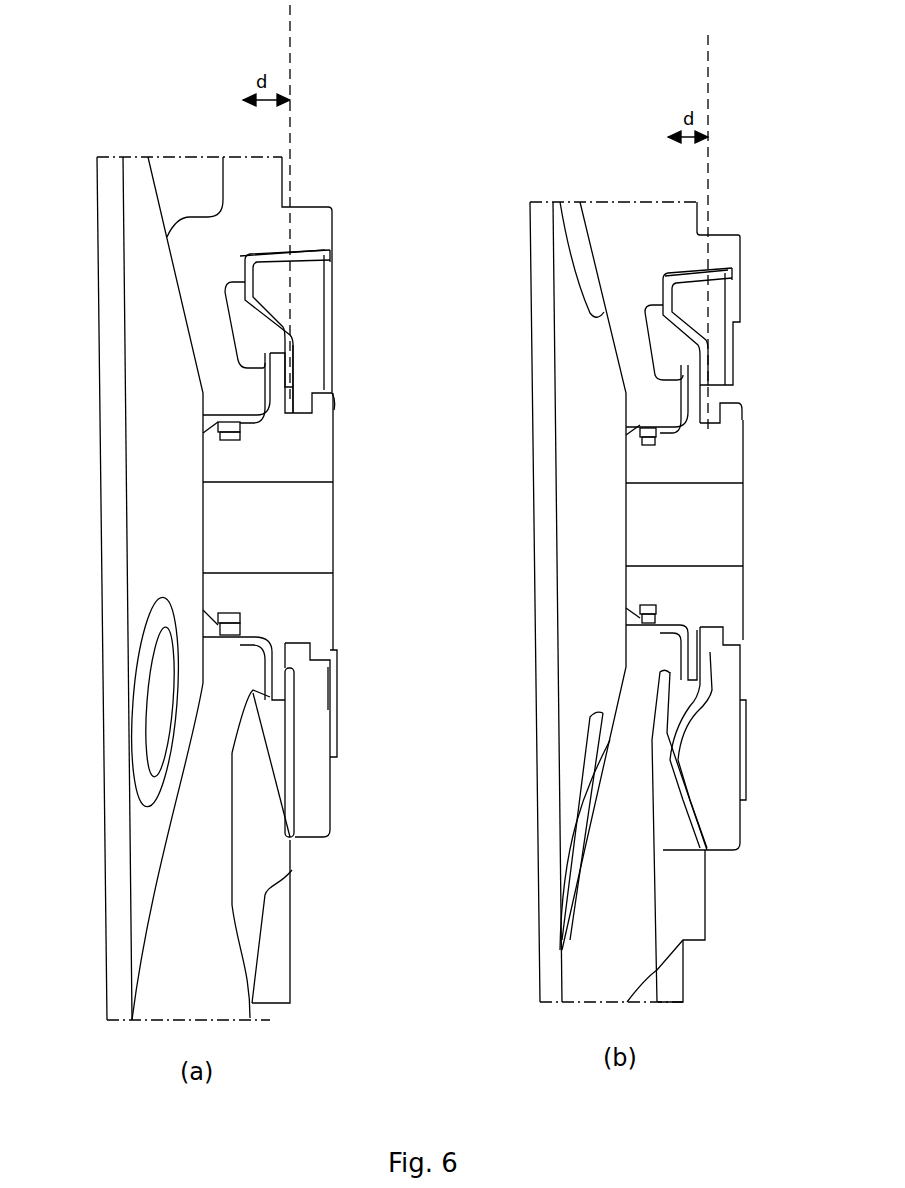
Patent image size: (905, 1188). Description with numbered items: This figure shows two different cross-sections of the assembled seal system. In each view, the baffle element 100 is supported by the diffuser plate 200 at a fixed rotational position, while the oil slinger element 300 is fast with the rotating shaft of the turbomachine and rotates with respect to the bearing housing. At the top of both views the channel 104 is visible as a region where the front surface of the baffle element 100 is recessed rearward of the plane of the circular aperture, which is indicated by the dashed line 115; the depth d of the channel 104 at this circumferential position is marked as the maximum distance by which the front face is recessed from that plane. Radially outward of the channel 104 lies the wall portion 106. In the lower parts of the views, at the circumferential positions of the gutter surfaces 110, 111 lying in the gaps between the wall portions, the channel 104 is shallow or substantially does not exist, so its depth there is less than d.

The baffle element 100 is at (498, 479).
The channel 104 is at (264, 283).
The wall portion 106 is at (308, 252).
The gutter surface 110 is at (693, 808).
The gutter surface 111 is at (307, 800).
The dashed line 115 is at (290, 48).
The diffuser plate 200 is at (205, 310).
The oil slinger element 300 is at (314, 452).